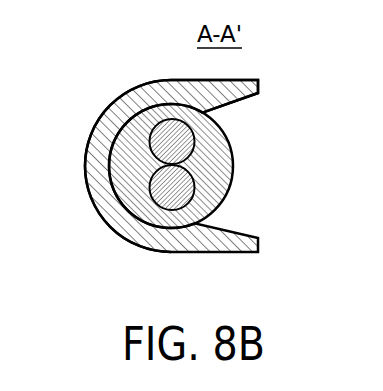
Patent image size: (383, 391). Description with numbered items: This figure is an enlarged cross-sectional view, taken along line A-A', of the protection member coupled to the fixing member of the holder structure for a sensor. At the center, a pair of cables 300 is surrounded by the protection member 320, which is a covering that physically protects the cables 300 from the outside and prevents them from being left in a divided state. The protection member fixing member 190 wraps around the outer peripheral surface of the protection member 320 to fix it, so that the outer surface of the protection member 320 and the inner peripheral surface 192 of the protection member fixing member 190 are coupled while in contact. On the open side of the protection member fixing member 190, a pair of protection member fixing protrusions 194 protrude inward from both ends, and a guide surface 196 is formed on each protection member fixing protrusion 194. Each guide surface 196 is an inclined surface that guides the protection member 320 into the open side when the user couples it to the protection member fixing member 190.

The protection member fixing member 190 is at (133, 98).
The inner peripheral surface 192 is at (110, 142).
The protection member fixing protrusion 194 is at (206, 112).
The guide surface 196 is at (258, 96).
The cables 300 is at (196, 184).
The protection member 320 is at (222, 198).